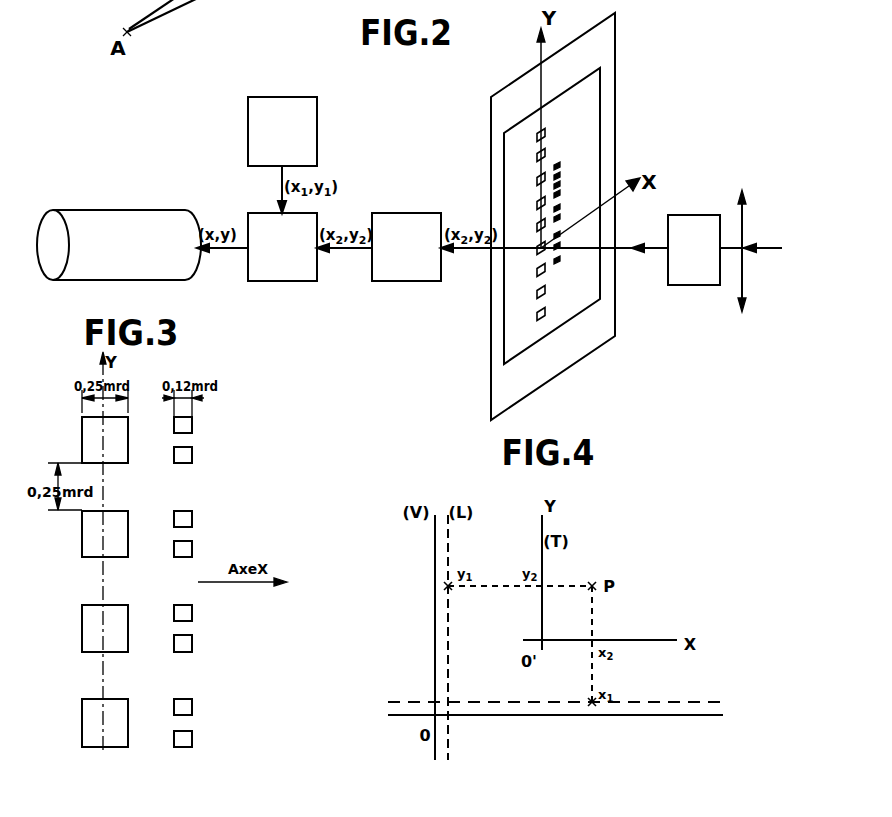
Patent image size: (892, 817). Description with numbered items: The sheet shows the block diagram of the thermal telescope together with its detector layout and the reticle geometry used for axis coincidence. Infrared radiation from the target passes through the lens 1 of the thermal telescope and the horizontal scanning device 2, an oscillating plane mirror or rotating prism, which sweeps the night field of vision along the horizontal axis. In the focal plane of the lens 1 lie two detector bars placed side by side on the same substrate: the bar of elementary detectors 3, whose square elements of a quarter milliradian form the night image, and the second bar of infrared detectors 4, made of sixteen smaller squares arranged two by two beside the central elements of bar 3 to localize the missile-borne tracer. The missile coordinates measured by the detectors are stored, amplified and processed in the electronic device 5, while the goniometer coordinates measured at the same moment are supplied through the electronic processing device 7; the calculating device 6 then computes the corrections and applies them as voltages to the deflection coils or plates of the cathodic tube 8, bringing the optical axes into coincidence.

The lens 1 is at (744, 220).
The horizontal scanning device 2 is at (689, 281).
The bar of elementary detectors 3 is at (538, 156).
The second bar of infrared detectors 4 is at (562, 186).
The electronic device 5 is at (405, 274).
The calculating device 6 is at (286, 274).
The electronic storing, amplifying and processing device 7 is at (310, 135).
The cathodic tube 8 is at (126, 220).